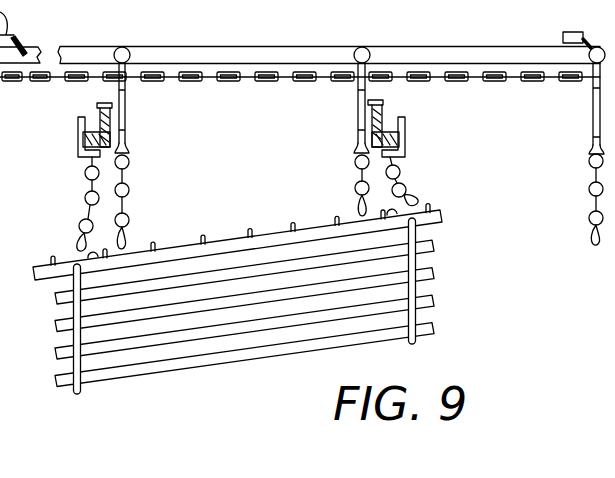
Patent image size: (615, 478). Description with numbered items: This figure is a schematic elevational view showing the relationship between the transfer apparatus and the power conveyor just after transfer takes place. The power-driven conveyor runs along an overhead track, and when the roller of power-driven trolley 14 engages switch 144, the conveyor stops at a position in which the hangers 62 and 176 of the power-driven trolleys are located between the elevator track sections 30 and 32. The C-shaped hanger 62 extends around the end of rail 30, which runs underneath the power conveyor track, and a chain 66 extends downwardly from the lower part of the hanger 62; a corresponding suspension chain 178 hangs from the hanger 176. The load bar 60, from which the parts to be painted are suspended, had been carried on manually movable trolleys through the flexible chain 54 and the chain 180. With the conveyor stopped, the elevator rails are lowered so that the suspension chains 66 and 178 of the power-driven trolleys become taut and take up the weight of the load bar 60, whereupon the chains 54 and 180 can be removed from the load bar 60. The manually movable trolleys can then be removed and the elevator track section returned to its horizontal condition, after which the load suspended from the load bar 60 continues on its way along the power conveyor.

The trolley 14 is at (587, 60).
The switch 144 is at (563, 40).
The hanger 176 is at (127, 118).
The suspension chain 178 is at (130, 192).
The elevator track section 32 is at (95, 107).
The chain 180 is at (79, 227).
The C-shaped hanger 62 is at (357, 118).
The chain 66 is at (355, 190).
The elevator rail 30 is at (392, 104).
The flexible chain 54 is at (407, 190).
The load bar 60 is at (237, 238).